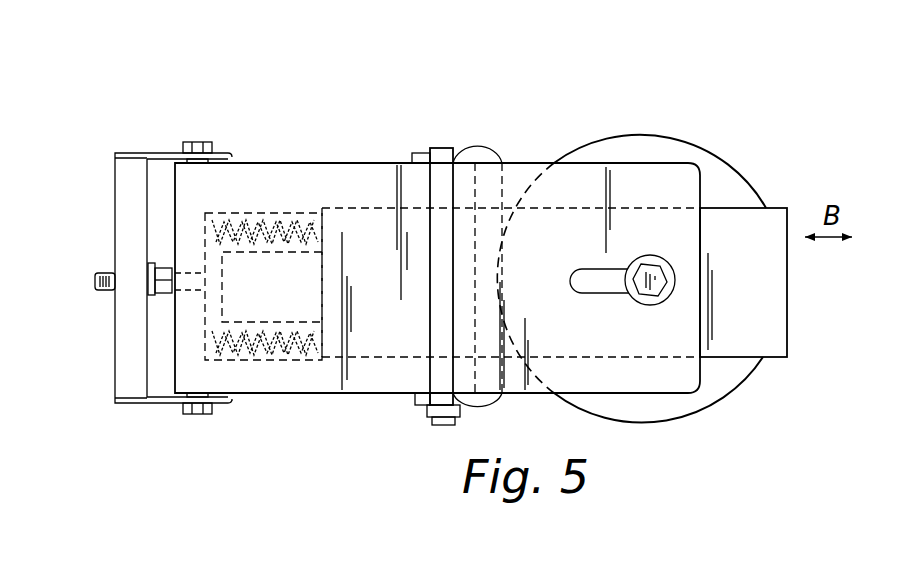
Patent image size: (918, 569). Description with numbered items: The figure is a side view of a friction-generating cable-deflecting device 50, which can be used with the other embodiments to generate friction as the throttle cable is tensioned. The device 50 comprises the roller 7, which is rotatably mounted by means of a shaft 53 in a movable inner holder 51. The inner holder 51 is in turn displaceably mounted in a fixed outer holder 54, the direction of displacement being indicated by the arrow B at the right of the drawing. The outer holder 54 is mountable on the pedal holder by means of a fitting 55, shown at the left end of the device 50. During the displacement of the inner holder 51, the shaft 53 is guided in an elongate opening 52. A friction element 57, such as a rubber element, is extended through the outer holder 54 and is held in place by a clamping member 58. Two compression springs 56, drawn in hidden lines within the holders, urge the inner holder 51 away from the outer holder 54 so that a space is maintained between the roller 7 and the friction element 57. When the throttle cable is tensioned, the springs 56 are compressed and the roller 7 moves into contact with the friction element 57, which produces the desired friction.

The friction-generating cable-deflecting device 50 is at (531, 118).
The movable inner holder 51 is at (335, 208).
The elongate opening 52 is at (588, 270).
The shaft 53 is at (642, 292).
The fixed outer holder 54 is at (548, 162).
The fitting 55 is at (115, 253).
The compression springs 56 is at (275, 212).
The friction element 57 is at (477, 160).
The clamping member 58 is at (441, 162).
The roller 7 is at (708, 155).